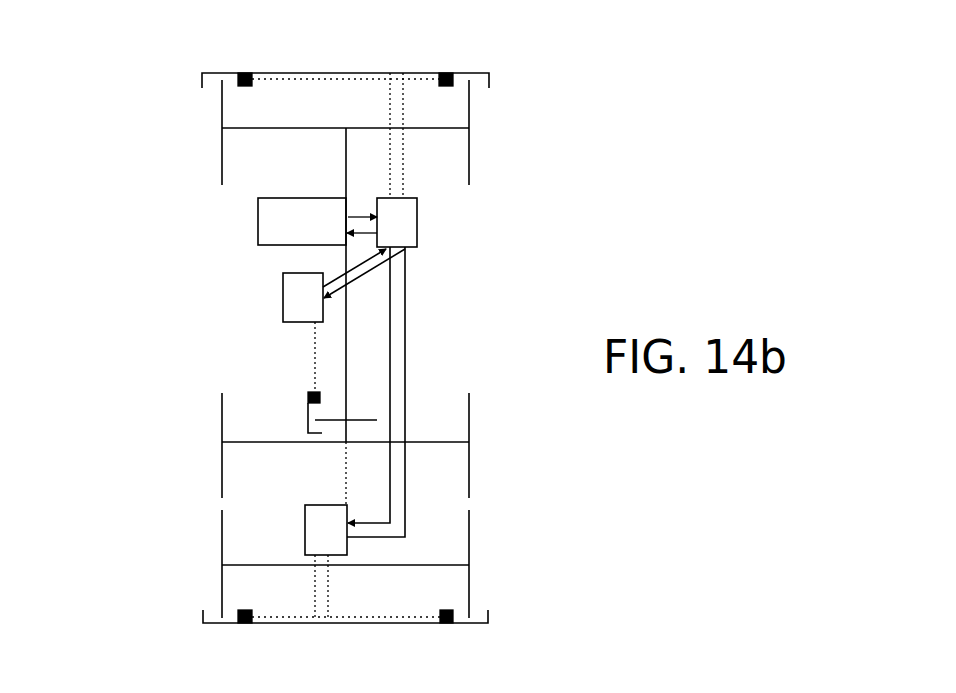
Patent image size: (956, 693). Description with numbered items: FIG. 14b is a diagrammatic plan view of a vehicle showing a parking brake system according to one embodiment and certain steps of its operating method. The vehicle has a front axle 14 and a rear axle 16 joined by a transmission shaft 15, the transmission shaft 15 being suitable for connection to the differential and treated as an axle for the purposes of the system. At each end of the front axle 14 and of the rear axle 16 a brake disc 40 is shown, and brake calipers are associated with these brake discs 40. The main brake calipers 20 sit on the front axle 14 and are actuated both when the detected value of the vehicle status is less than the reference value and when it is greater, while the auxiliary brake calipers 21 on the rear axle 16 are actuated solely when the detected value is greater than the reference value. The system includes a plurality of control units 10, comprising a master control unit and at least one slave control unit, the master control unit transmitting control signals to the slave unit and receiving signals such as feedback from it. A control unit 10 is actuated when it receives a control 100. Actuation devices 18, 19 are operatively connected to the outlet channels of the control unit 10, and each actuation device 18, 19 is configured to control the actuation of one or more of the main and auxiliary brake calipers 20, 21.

The control unit 10 is at (353, 345).
The front axle 14 is at (305, 130).
The transmission shaft 15 is at (346, 327).
The rear axle 16 is at (423, 442).
The first actuation device 18 is at (353, 345).
The second actuation device 19 is at (408, 223).
The main brake caliper 20 is at (245, 72).
The auxiliary brake caliper 21 is at (308, 400).
The brake disc 40 is at (222, 155).
The control 100 is at (317, 221).